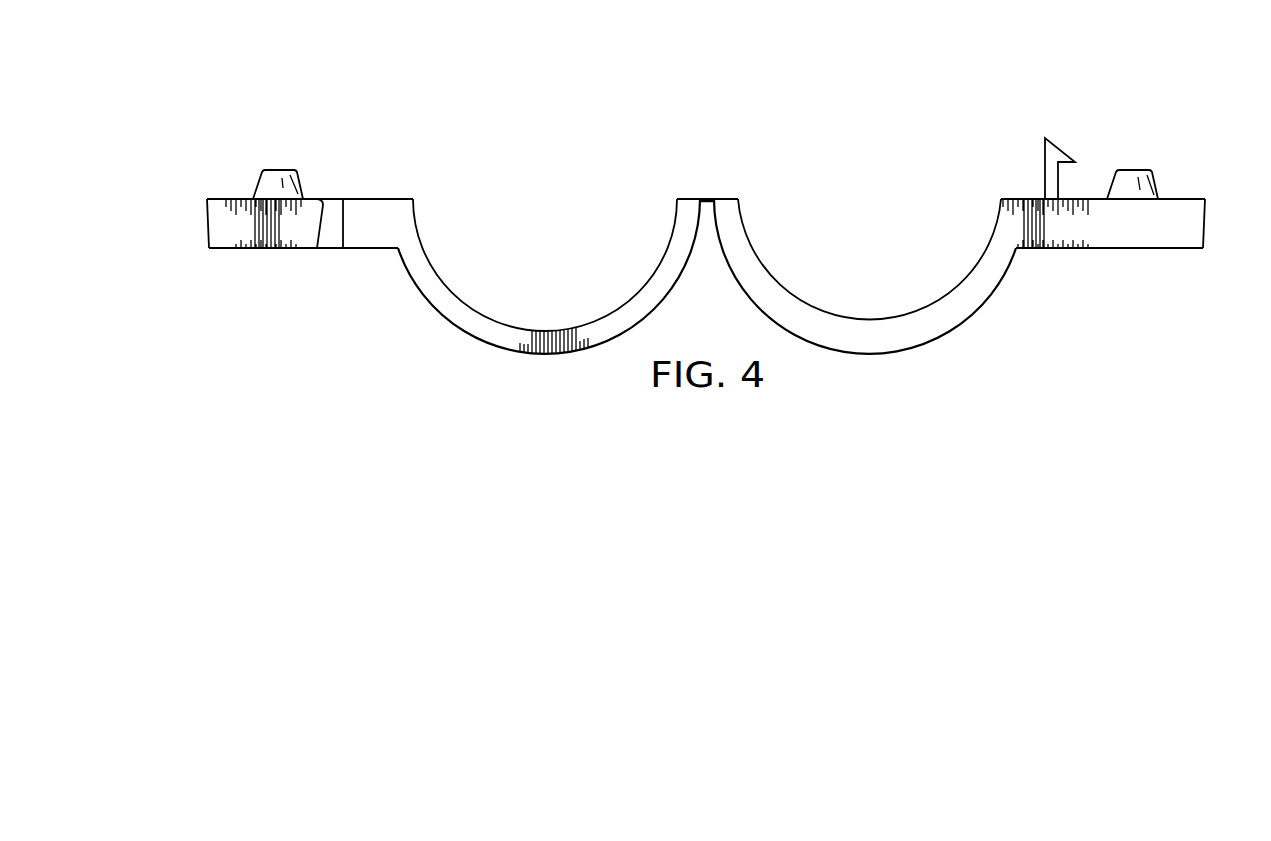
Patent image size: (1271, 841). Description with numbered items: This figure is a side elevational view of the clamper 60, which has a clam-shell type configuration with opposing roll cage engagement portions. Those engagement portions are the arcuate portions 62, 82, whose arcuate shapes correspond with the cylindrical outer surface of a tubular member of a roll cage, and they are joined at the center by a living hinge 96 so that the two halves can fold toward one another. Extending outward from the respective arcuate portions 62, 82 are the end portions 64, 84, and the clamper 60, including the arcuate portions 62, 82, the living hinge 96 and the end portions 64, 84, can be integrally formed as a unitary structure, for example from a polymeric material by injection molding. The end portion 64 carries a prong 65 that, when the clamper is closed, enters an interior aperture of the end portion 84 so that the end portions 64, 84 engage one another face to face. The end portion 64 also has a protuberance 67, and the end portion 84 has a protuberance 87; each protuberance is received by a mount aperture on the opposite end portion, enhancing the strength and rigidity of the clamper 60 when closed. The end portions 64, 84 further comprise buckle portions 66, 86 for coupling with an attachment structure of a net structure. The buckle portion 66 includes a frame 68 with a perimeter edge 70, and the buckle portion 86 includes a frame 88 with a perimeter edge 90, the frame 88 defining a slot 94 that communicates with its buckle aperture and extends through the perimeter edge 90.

The clamper 60 is at (426, 66).
The arcuate portion 62 is at (851, 126).
The end portion 64 is at (1091, 126).
The prong 65 is at (1044, 150).
The buckle portion 66 is at (1207, 272).
The protuberance 67 is at (1133, 170).
The frame 68 is at (1158, 254).
The perimeter edge 70 is at (1103, 238).
The arcuate portion 82 is at (560, 126).
The end portion 84 is at (320, 126).
The buckle portion 86 is at (204, 272).
The protuberance 87 is at (278, 170).
The frame 88 is at (250, 254).
The perimeter edge 90 is at (300, 242).
The slot 94 is at (323, 208).
The living hinge 96 is at (706, 199).